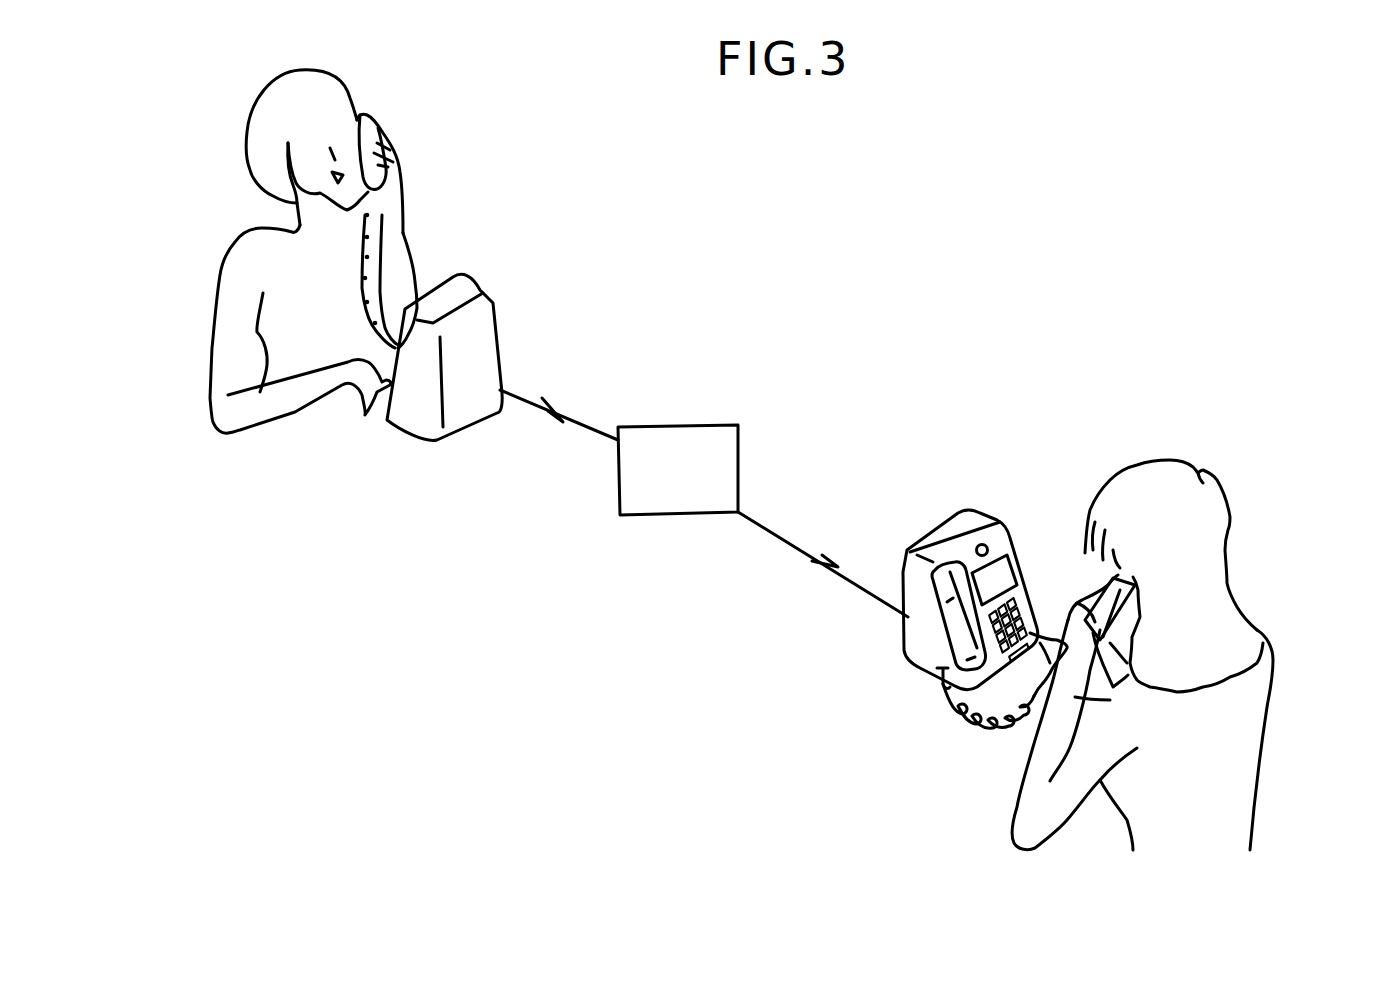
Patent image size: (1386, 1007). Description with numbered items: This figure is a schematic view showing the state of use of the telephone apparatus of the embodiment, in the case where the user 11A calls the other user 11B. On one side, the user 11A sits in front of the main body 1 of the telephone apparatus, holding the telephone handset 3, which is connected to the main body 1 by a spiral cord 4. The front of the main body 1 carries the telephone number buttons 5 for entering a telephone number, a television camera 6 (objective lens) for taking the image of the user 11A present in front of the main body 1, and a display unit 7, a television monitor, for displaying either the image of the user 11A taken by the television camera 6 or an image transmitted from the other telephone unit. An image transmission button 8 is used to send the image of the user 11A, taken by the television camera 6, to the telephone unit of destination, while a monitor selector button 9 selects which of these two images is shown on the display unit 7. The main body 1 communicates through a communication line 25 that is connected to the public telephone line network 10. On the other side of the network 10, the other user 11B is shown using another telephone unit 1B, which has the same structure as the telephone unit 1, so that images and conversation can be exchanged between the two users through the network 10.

The main body 1 is at (980, 568).
The telephone unit 1B is at (497, 312).
The telephone handset 3 is at (1133, 583).
The spiral cord 4 is at (963, 727).
The telephone number buttons 5 is at (1023, 610).
The television camera 6 is at (986, 546).
The display unit 7 is at (1007, 568).
The image transmission button 8 is at (943, 685).
The monitor selector button 9 is at (997, 717).
The public telephone line network 10 is at (706, 426).
The user 11A is at (1273, 647).
The user 11B is at (227, 258).
The communication line 25 is at (858, 598).